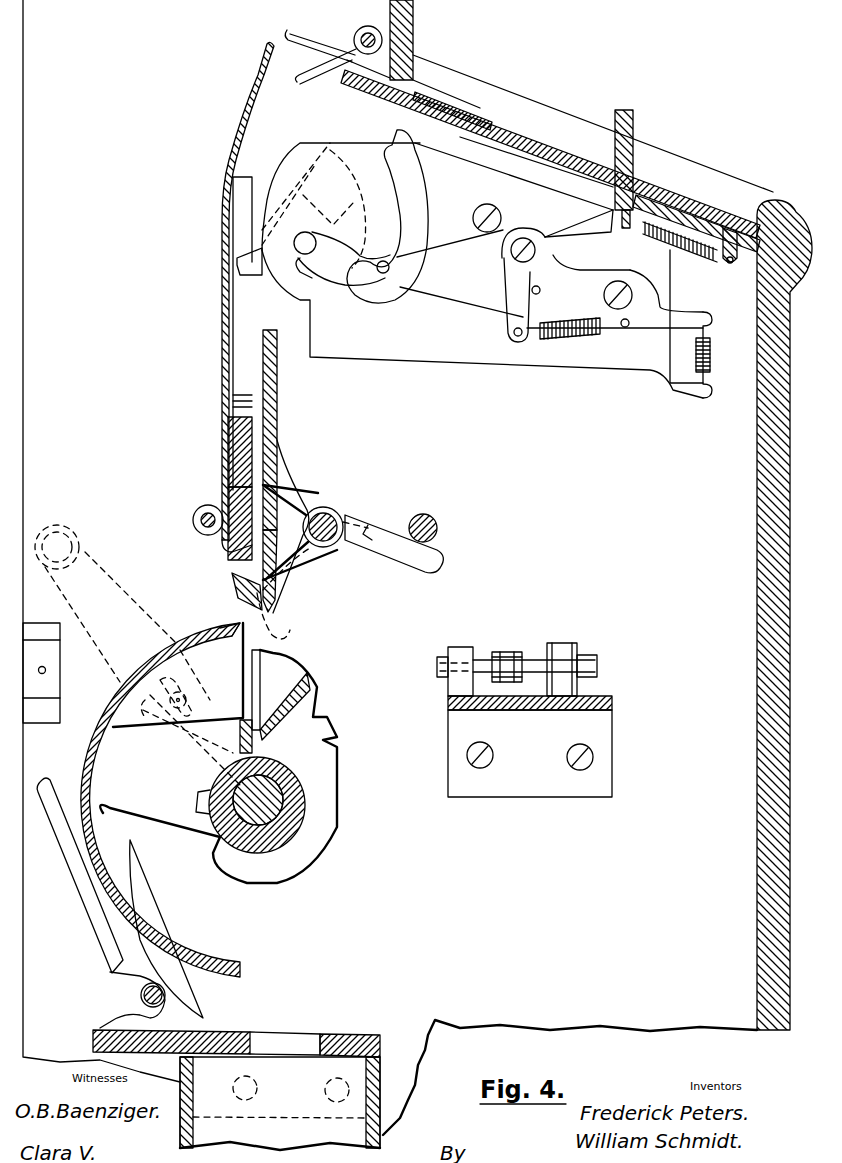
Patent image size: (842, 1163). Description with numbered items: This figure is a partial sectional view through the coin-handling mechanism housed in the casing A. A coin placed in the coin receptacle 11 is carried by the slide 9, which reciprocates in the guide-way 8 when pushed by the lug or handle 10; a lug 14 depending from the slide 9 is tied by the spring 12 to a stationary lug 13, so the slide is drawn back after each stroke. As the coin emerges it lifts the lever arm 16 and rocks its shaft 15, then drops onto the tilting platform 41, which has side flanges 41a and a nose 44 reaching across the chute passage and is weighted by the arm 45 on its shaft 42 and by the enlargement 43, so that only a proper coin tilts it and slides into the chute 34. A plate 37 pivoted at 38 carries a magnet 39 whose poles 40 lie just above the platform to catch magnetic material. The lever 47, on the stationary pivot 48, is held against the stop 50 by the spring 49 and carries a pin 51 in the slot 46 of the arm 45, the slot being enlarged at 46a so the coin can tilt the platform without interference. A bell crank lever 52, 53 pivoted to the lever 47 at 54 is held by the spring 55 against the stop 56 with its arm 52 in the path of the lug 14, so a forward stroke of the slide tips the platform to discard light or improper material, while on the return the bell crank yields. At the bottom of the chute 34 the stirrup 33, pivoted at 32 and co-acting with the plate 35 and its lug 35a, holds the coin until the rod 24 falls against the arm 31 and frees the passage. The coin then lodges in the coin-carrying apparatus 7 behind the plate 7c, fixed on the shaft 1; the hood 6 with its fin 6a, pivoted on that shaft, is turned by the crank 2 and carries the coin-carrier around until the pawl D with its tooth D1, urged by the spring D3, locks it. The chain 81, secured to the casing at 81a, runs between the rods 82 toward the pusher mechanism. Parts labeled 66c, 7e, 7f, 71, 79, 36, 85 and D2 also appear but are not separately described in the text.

The casing A is at (757, 943).
The shaft 1 is at (283, 817).
The crank 2 is at (85, 548).
The hood 6 is at (240, 980).
The fin 6a is at (178, 704).
The sector edge 66c is at (219, 618).
The coin-carrying apparatus 7 is at (280, 830).
The plate 7c is at (275, 648).
The hub notch 7e is at (325, 716).
The hub notch 7f is at (338, 742).
The hub body 71 is at (337, 800).
The key bar 79 is at (260, 679).
The guide-way 8 is at (420, 95).
The slide 9 is at (688, 205).
The lug or handle 10 is at (634, 125).
The coin receptacle 11 is at (478, 120).
The spring 12 is at (690, 252).
The stationary lug 13 is at (730, 266).
The lug 14 is at (612, 207).
The shaft 15 is at (368, 26).
The lever arm 16 is at (340, 45).
The rod 24 is at (432, 520).
The arm 31 is at (392, 552).
The pivot 32 is at (325, 507).
The stirrup 33 is at (232, 583).
The coin chute 34 is at (262, 432).
The plate 35 is at (291, 526).
The lug 35a is at (298, 622).
The link 36 is at (315, 555).
The plate 37 is at (222, 370).
The pivot 38 is at (193, 521).
The magnet 39 is at (255, 471).
The poles 40 is at (233, 238).
The tilting platform 41 is at (300, 170).
The side flanges 41a is at (275, 300).
The shaft 42 is at (292, 262).
The enlargement 43 is at (348, 209).
The nose 44 is at (237, 272).
The arm 45 is at (316, 248).
The slot 46 is at (393, 232).
The enlargement of slot 46a is at (458, 307).
The lever 47 is at (505, 211).
The stationary pivot 48 is at (645, 316).
The spring 49 is at (712, 358).
The stop 50 is at (487, 204).
The pin 51 is at (377, 268).
The bell crank arm 52 is at (565, 242).
The bell crank arm 53 is at (505, 300).
The pivot 54 is at (525, 238).
The spring 55 is at (566, 332).
The stop 56 is at (540, 289).
The chain 81 is at (510, 660).
The chain attachment point 81a is at (460, 650).
The rods 82 is at (562, 650).
The block 85 is at (48, 670).
The pawl D is at (159, 929).
The tooth D1 is at (70, 878).
The wire D2 is at (112, 968).
The spring D3 is at (140, 996).